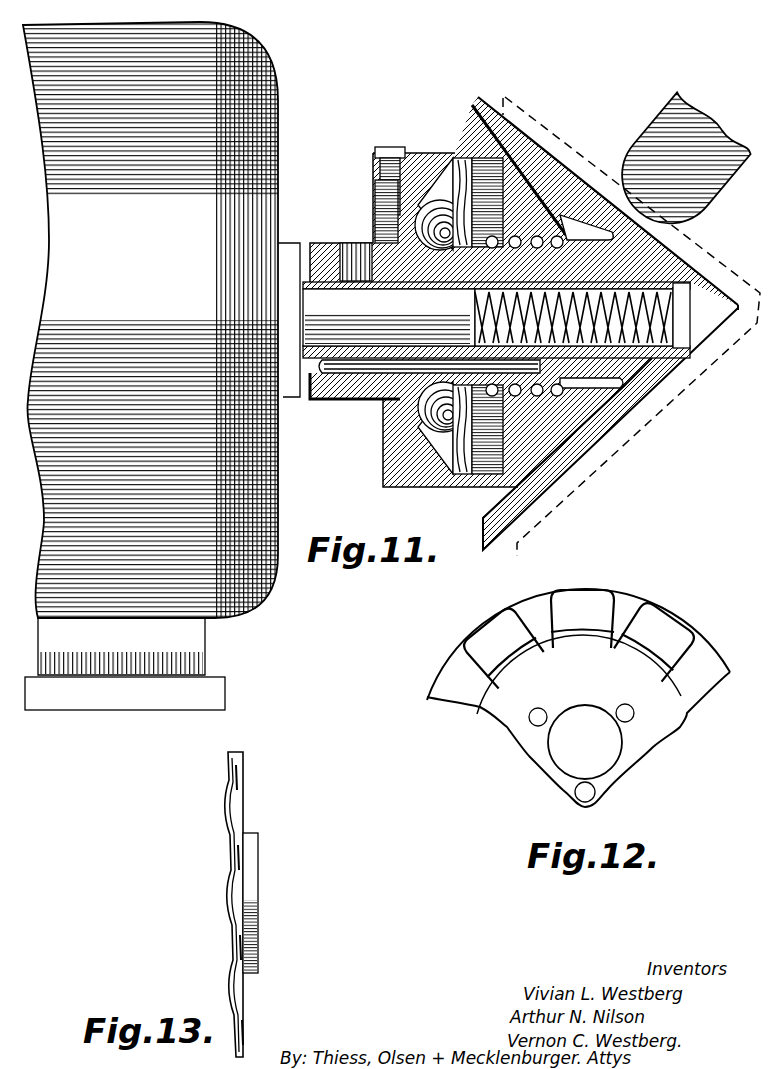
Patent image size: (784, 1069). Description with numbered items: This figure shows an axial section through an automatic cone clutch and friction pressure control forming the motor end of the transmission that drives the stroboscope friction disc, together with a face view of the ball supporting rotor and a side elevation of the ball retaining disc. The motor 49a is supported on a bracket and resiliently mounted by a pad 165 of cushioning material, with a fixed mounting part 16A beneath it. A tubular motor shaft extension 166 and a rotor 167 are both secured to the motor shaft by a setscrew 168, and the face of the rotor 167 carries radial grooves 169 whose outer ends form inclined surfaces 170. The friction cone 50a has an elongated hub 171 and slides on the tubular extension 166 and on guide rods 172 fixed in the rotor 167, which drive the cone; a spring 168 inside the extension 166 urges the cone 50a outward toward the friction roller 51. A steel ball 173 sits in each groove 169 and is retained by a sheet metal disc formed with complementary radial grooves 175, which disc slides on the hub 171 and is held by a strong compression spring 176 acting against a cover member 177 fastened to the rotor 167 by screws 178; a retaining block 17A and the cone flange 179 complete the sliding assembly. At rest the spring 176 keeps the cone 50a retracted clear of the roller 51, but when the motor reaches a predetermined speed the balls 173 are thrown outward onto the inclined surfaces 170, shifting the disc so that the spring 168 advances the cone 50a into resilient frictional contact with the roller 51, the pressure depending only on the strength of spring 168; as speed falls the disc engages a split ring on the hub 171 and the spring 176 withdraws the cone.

In FIG. 11, the motor 49a is at (274, 113).
In FIG. 11, the pad 165 is at (188, 665).
In FIG. 11, the mounting plate 16A is at (212, 693).
In FIG. 11, the spring 168 is at (350, 247).
In FIG. 11, the radial grooves 169 is at (390, 198).
In FIG. 12, the radial grooves 169 is at (588, 635).
In FIG. 11, the inclined surfaces 170 is at (428, 157).
In FIG. 12, the inclined surfaces 170 is at (588, 602).
In FIG. 11, the screws 178 is at (380, 148).
In FIG. 11, the radial grooves 175 is at (440, 150).
In FIG. 13, the radial grooves 175 is at (235, 903).
In FIG. 11, the cage block 17A is at (465, 152).
In FIG. 13, the cage block 17A is at (259, 994).
In FIG. 11, the compression spring 176 is at (522, 235).
In FIG. 11, the hub 171 is at (543, 233).
In FIG. 11, the cover member 177 is at (560, 233).
In FIG. 11, the friction roller 51 is at (722, 197).
In FIG. 11, the tubular motor shaft extension 166 is at (648, 360).
In FIG. 11, the friction cone 50a is at (650, 402).
In FIG. 11, the cone flange 179 is at (570, 473).
In FIG. 11, the guide rods 172 is at (350, 382).
In FIG. 11, the rotor 167 is at (399, 400).
In FIG. 11, the steel ball 173 is at (423, 425).